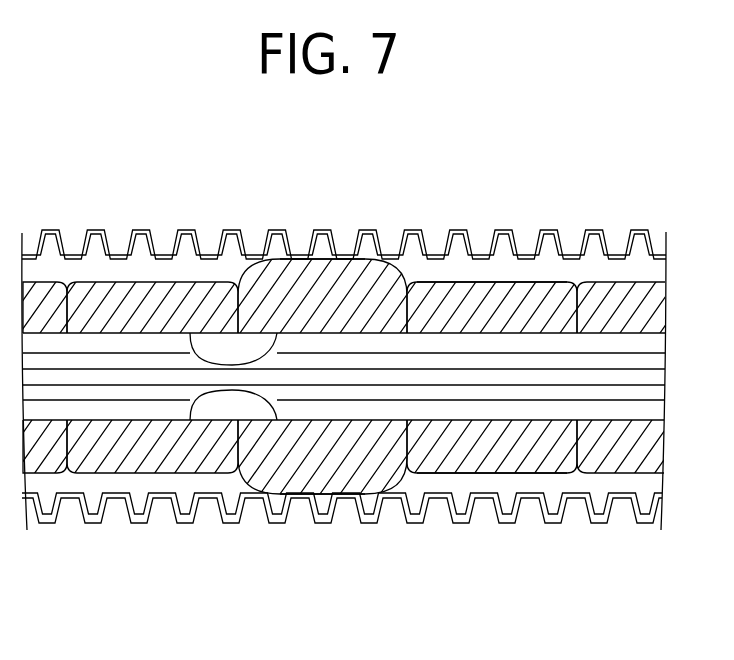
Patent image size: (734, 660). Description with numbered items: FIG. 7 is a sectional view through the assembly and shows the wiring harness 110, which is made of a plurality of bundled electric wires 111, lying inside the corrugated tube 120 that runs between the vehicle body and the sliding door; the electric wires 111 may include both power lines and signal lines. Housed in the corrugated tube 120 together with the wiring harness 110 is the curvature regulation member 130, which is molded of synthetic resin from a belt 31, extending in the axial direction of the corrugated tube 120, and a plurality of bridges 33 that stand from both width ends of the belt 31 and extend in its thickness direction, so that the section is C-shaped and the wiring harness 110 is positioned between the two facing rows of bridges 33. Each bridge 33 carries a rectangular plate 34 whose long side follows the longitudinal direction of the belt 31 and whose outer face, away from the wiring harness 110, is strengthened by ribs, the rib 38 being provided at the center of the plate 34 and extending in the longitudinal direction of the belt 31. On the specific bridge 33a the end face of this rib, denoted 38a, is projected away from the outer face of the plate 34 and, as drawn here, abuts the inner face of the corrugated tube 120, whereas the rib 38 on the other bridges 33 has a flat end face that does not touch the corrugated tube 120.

The corrugated tube 120 is at (53, 230).
The curvature regulation member 130 is at (614, 281).
The wiring harness 110 is at (607, 402).
The electric wires 111 is at (514, 362).
The belt 31 is at (548, 345).
The bridge 33 is at (478, 281).
The specific bridge 33a is at (365, 256).
The plate 34 is at (191, 333).
The rib 38 is at (121, 295).
The projecting rib end face 38a is at (258, 277).